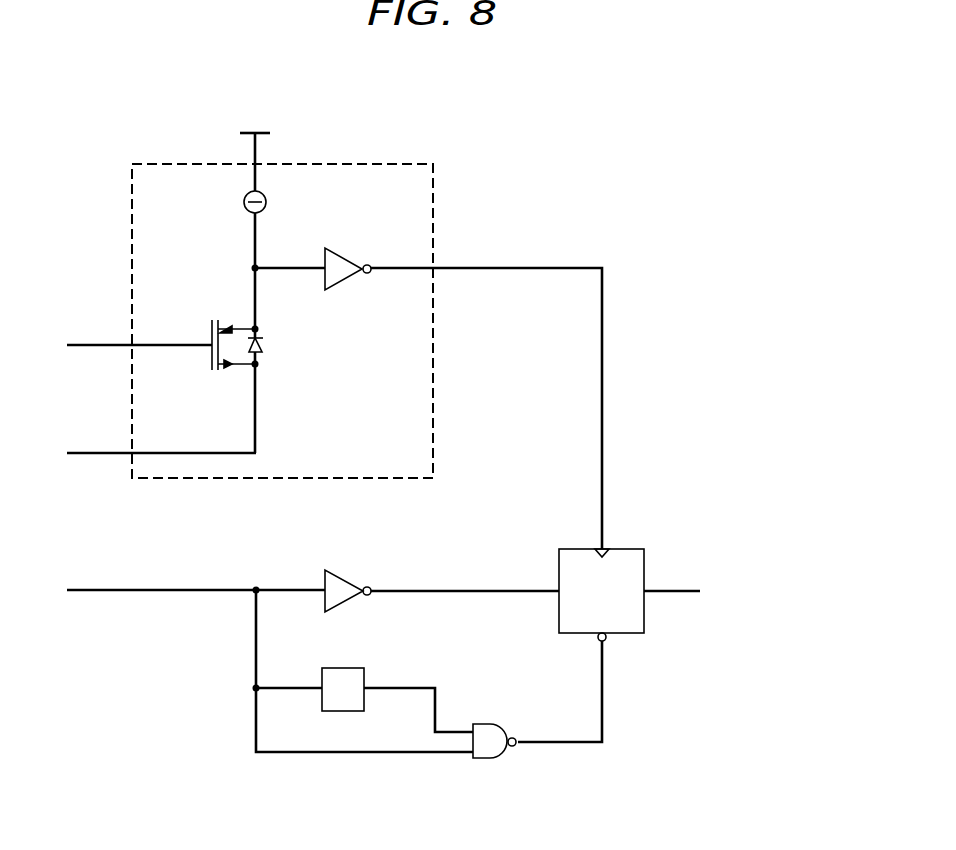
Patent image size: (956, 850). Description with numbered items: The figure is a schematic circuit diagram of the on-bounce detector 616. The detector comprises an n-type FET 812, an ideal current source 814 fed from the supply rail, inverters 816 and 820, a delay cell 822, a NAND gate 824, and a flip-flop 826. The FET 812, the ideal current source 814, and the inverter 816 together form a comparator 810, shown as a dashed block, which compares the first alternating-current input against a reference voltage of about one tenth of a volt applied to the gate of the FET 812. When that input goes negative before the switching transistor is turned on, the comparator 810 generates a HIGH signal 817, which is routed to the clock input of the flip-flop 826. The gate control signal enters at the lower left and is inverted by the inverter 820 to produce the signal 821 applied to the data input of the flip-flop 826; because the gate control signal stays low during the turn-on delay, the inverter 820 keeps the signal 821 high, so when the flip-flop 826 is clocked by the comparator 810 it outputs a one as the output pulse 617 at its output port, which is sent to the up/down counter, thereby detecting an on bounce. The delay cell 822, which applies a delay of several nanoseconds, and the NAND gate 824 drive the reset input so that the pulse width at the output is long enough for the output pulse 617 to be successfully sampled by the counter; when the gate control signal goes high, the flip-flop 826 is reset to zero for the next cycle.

The on-bounce detector 616 is at (450, 81).
The comparator 810 is at (333, 164).
The n-type FET 812 is at (210, 335).
The ideal current source 814 is at (243, 203).
The inverter 816 is at (348, 256).
The HIGH signal 817 is at (530, 267).
The inverter 820 is at (351, 570).
The input signal 821 is at (462, 589).
The delay cell 822 is at (342, 667).
The NAND gate 824 is at (488, 723).
The flip-flop 826 is at (625, 548).
The output pulse 617 is at (668, 594).